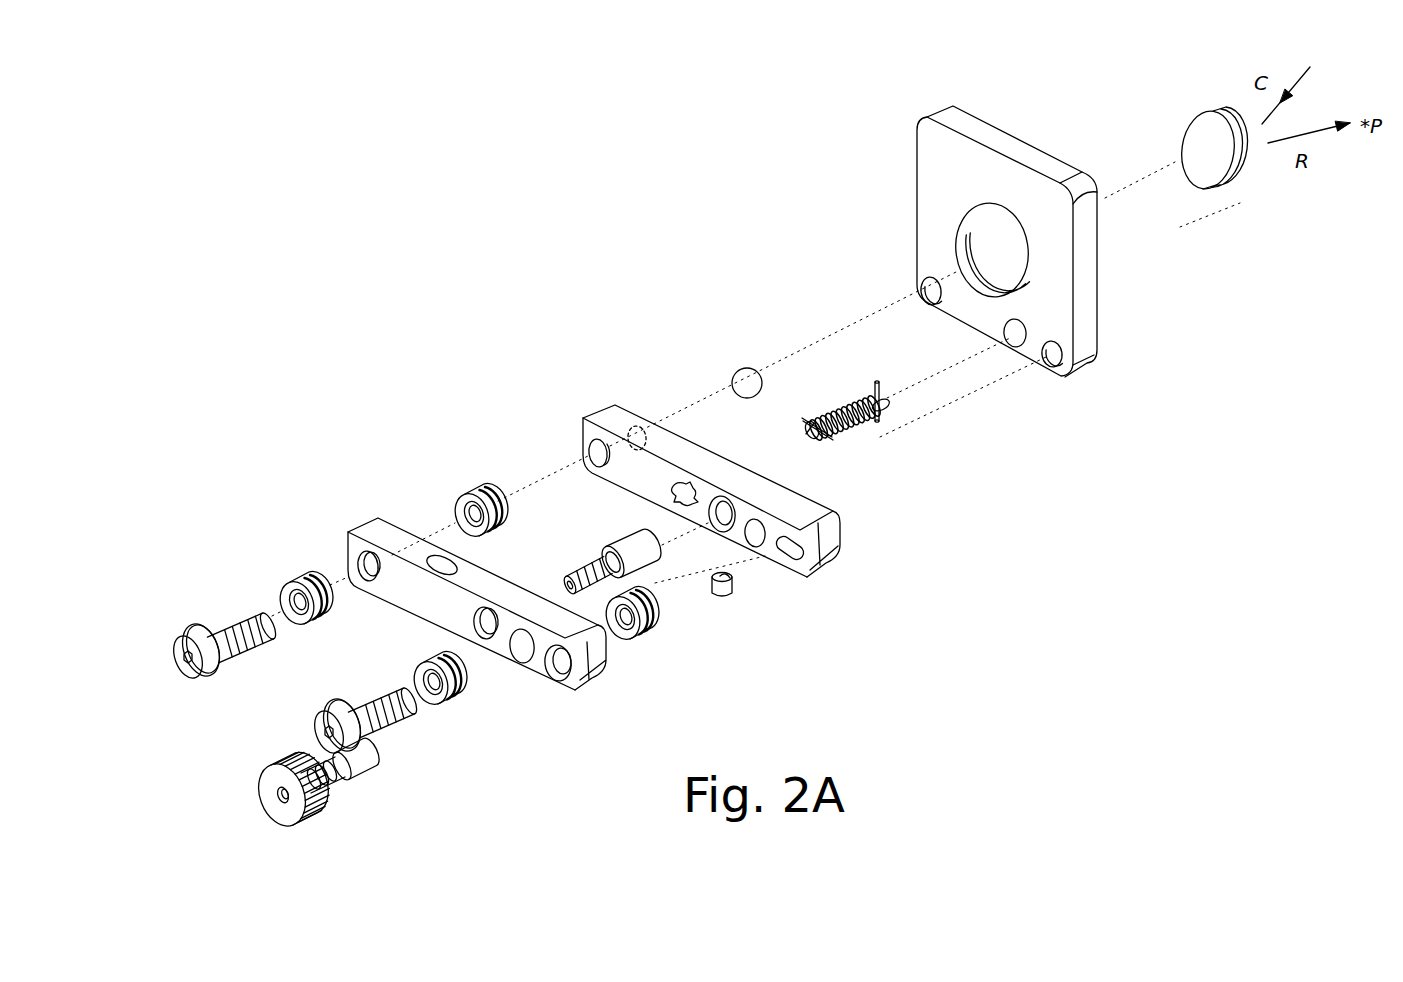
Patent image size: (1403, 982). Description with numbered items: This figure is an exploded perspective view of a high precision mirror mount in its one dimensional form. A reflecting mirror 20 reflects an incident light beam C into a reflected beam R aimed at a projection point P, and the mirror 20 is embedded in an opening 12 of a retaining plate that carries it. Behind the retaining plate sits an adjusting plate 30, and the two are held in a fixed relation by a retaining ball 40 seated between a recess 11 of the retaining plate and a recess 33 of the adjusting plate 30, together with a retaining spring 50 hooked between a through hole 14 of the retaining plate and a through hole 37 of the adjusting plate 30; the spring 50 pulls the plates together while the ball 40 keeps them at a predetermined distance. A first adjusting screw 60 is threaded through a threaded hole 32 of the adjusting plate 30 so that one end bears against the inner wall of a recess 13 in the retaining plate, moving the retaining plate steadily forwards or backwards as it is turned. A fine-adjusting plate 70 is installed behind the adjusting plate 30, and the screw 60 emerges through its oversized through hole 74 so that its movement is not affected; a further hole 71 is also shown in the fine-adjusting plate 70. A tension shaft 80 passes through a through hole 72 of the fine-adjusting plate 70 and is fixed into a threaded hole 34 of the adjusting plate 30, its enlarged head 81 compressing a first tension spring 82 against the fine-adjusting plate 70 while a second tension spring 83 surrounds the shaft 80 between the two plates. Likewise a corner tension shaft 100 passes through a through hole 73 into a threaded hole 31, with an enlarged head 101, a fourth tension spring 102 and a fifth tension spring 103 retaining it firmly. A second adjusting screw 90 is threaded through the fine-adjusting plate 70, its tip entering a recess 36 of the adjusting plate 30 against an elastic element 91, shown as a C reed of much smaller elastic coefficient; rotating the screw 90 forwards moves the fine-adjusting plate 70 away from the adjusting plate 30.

The recess 11 is at (924, 287).
The opening 12 is at (1013, 272).
The recess 13 is at (1056, 367).
The through hole 14 is at (1016, 327).
The reflecting mirror 20 is at (1210, 125).
The adjusting plate 30 is at (833, 578).
The threaded hole 31 is at (590, 450).
The threaded hole 32 is at (724, 507).
The recess 33 is at (638, 428).
The threaded hole 34 is at (757, 527).
The recess 36 is at (796, 545).
The through hole 37 is at (678, 486).
The retaining ball 40 is at (744, 371).
The retaining spring 50 is at (860, 400).
The first adjusting screw 60 is at (605, 553).
The fine-adjusting plate 70 is at (588, 694).
The hole 71 is at (556, 668).
The through hole 72 is at (520, 650).
The through hole 73 is at (364, 553).
The through hole 74 is at (488, 608).
The tension shaft 80 is at (390, 690).
The enlarged head 81 is at (324, 733).
The first tension spring 82 is at (415, 676).
The second tension spring 83 is at (645, 598).
The second adjusting screw 90 is at (283, 763).
The elastic element 91 is at (735, 588).
The corner tension shaft 100 is at (250, 612).
The enlarged head 101 is at (184, 647).
The fourth tension spring 102 is at (282, 585).
The fifth tension spring 103 is at (494, 490).